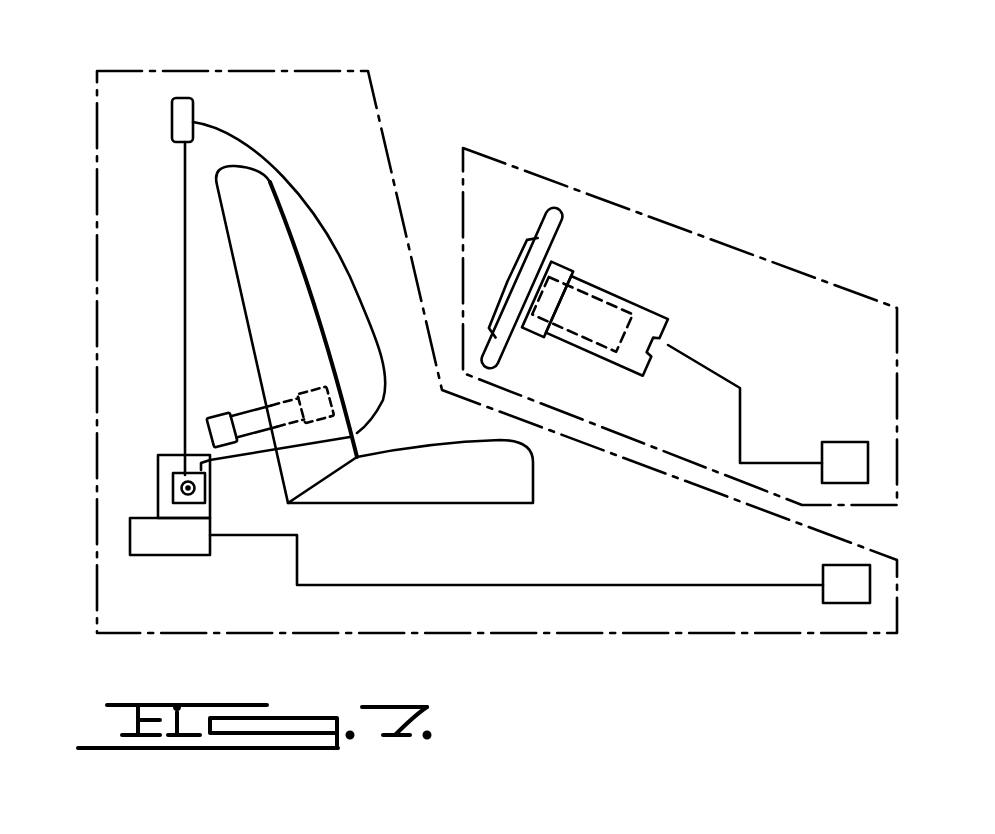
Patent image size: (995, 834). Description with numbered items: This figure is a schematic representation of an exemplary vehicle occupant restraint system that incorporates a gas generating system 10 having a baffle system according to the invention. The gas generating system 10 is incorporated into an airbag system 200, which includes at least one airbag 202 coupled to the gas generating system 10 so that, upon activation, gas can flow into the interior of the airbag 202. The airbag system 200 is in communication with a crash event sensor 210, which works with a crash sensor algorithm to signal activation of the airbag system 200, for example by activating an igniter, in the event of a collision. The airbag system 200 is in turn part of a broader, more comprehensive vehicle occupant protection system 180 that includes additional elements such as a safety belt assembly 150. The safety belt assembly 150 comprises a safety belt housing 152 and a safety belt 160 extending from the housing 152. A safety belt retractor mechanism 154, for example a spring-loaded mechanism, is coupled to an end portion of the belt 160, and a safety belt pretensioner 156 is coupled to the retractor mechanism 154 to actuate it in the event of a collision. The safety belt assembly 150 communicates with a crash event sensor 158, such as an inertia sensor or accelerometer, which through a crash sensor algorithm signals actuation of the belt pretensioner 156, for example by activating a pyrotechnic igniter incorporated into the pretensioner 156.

The gas generating system 10 is at (612, 323).
The safety belt assembly 150 is at (380, 110).
The safety belt housing 152 is at (212, 496).
The safety belt retractor mechanism 154 is at (158, 464).
The safety belt pretensioner 156 is at (143, 537).
The crash event sensor 158 is at (855, 600).
The safety belt 160 is at (247, 140).
The vehicle occupant protection system 180 is at (668, 150).
The airbag system 200 is at (840, 288).
The airbag 202 is at (560, 252).
The crash event sensor 210 is at (840, 448).